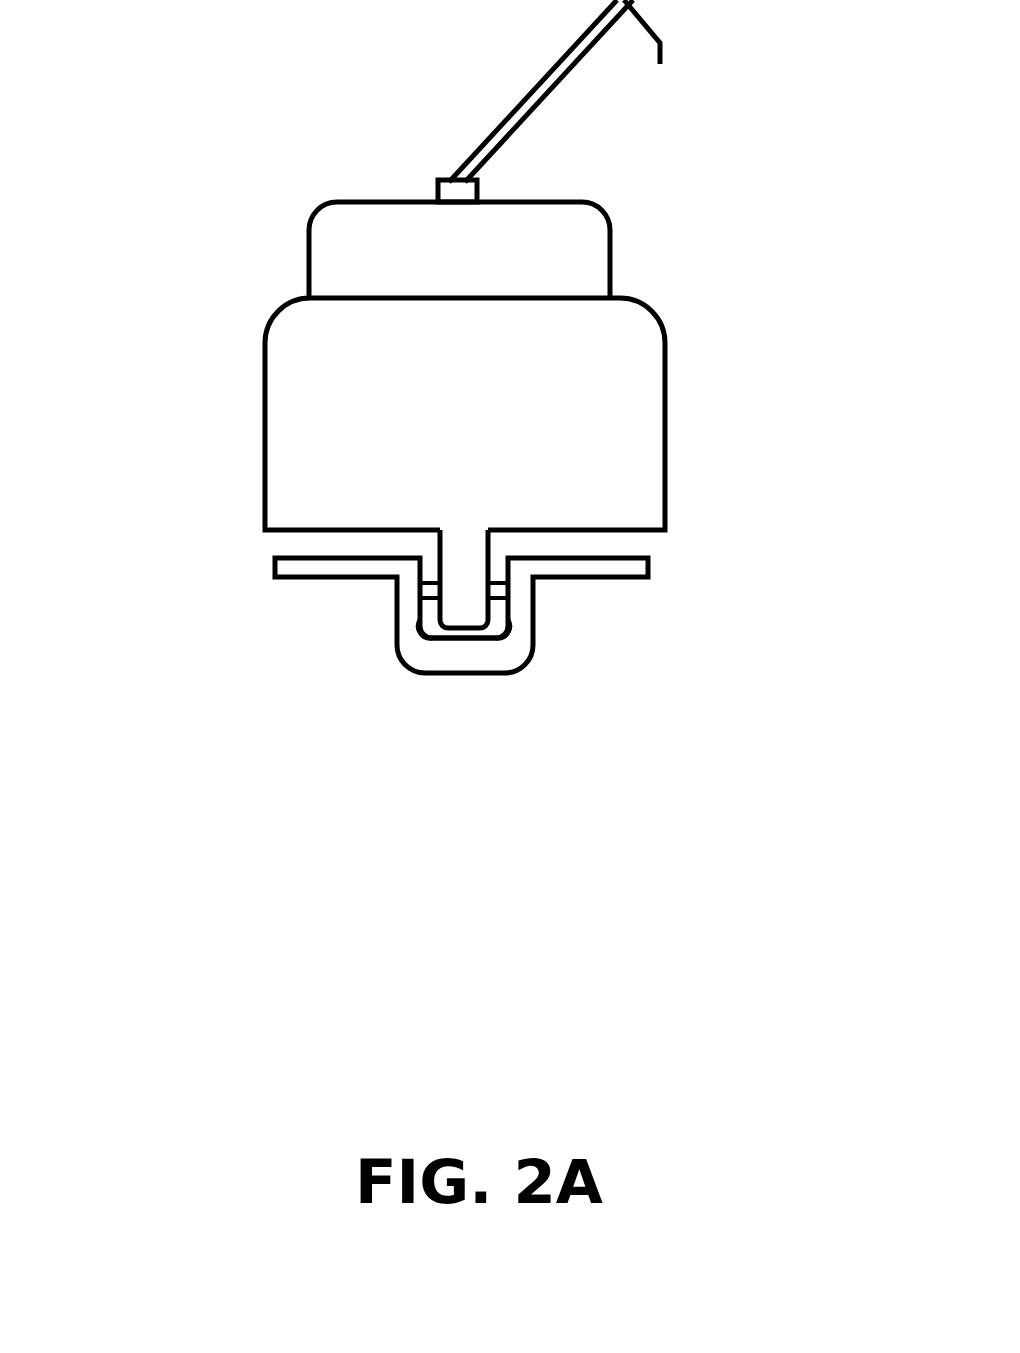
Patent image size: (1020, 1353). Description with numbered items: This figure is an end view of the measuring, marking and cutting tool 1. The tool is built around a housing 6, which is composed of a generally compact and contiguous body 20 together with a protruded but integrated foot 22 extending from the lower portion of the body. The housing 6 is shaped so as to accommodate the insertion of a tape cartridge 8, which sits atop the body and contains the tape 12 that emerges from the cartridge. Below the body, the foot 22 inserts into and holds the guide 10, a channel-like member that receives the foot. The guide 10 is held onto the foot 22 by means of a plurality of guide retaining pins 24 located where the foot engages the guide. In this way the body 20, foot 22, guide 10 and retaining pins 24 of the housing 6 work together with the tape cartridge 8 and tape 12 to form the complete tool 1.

The measuring, marking and cutting tool 1 is at (469, 381).
The housing 6 is at (678, 418).
The tape cartridge 8 is at (620, 277).
The guide 10 is at (591, 660).
The tape 12 is at (530, 98).
The body 20 is at (342, 472).
The foot 22 is at (494, 547).
The guide retaining pins 24 is at (270, 673).